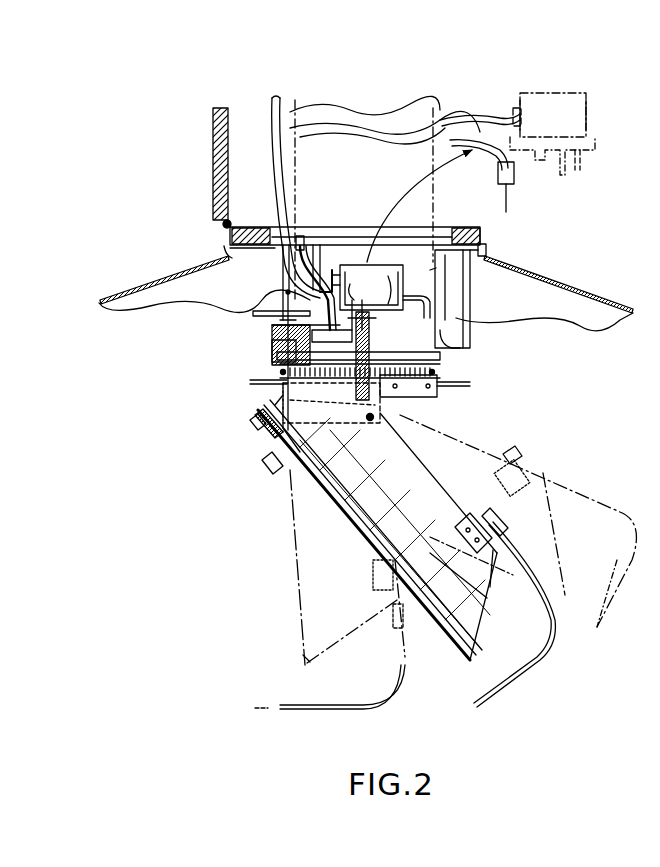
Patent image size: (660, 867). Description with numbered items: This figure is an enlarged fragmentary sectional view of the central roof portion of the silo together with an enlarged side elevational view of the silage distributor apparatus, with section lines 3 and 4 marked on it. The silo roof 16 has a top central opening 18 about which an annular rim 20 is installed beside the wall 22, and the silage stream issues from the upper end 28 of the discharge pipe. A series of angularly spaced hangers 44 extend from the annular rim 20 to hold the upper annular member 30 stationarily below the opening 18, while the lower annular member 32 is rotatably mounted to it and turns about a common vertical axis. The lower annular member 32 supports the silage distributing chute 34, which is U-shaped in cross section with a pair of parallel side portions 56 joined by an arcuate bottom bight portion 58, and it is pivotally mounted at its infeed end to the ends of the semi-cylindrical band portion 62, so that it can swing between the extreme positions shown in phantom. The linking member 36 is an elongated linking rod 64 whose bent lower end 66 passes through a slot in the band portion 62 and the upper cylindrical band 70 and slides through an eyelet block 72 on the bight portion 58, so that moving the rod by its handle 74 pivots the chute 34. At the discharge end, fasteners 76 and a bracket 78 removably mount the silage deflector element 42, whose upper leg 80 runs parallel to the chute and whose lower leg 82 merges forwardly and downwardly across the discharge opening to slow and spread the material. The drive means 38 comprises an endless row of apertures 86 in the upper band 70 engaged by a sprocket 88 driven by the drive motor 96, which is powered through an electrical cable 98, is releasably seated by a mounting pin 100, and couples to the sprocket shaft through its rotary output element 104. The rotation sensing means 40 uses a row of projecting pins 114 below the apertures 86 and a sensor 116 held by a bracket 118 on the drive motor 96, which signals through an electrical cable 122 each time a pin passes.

The section line 3- 3 is at (556, 466).
The section line 4- 4 is at (373, 242).
The silo roof 16 is at (600, 294).
The top central opening 18 is at (456, 228).
The annular rim 20 is at (250, 230).
The wall 22 is at (212, 176).
The upper end of the discharge pipe 28 is at (384, 193).
The upper annular member 30 is at (444, 322).
The lower annular member 32 is at (444, 410).
The silage distributing chute 34 is at (296, 568).
The linking member 36 is at (258, 320).
The drive means 38 is at (416, 282).
The rotation sensing means 40 is at (242, 384).
The silage deflector element 42 is at (614, 519).
The hangers 44 is at (322, 248).
The side portions 56 is at (434, 476).
The bottom bight portion 58 is at (352, 538).
The semi-cylindrical band portion 62 is at (266, 460).
The linking rod 64 is at (254, 312).
The lower end of the rod 66 is at (255, 426).
The upper cylindrical band 70 is at (406, 404).
The eyelet block 72 is at (284, 430).
The handle 74 is at (284, 290).
The fasteners 76 is at (462, 534).
The bracket 78 is at (498, 468).
The upper leg 80 is at (530, 458).
The lower leg 82 is at (614, 591).
The apertures 86 is at (444, 364).
The sprocket 88 is at (380, 396).
The drive motor 96 is at (592, 109).
The electrical cable 98 is at (272, 182).
The mounting pin 100 is at (406, 314).
The rotary output element 104 is at (370, 290).
The pins 114 is at (250, 381).
The sensor 116 is at (496, 170).
The bracket 118 is at (380, 272).
The electrical cable 122 is at (398, 150).